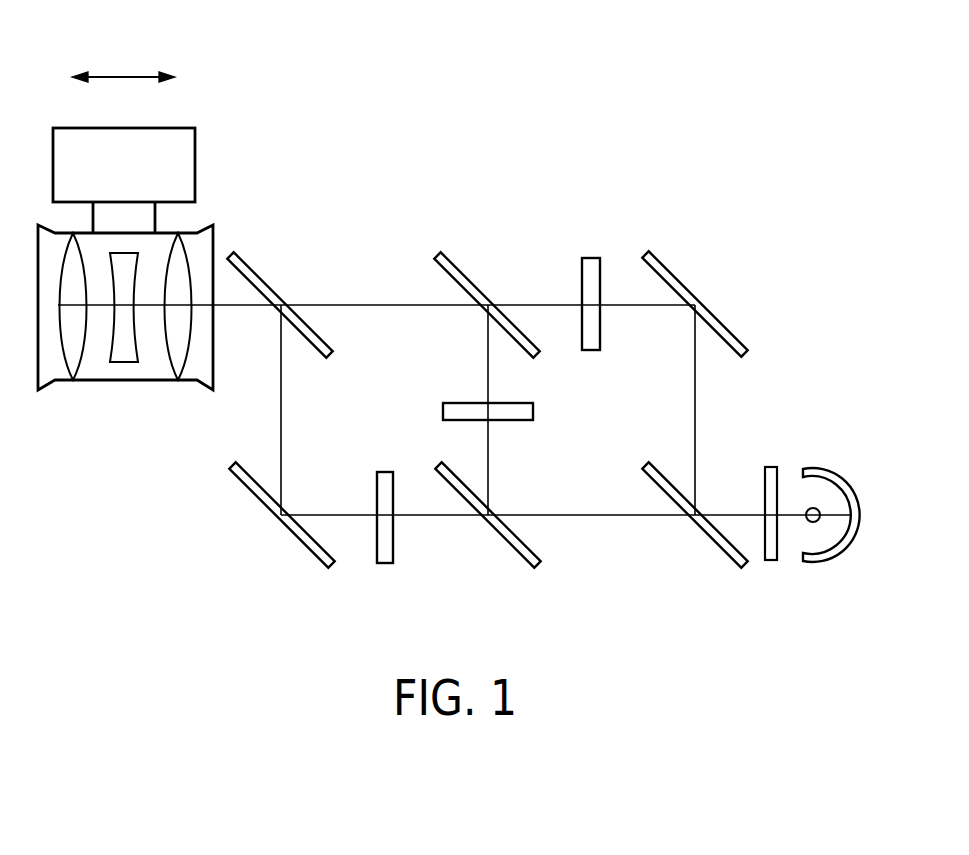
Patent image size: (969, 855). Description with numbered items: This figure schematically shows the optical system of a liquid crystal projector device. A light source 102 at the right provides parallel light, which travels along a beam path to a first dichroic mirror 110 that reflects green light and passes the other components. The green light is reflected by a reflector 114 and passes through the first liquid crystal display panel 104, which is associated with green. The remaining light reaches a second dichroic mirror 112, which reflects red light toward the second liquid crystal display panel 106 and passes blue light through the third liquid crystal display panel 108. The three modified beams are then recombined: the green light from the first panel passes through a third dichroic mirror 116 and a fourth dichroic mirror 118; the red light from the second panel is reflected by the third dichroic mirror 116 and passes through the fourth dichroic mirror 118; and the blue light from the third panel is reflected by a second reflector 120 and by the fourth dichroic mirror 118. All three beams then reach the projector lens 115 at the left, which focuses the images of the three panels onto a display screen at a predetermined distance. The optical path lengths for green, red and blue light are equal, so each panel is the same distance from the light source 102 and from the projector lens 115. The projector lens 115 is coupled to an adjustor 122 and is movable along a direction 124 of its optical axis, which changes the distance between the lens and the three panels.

The light source 102 is at (815, 470).
The first liquid crystal display panel 104 is at (600, 345).
The second liquid crystal display panel 106 is at (518, 420).
The third liquid crystal display panel 108 is at (373, 490).
The first dichroic mirror 110 is at (727, 557).
The second dichroic mirror 112 is at (518, 557).
The reflector 114 is at (673, 270).
The projector lens 115 is at (155, 380).
The third dichroic mirror 116 is at (467, 273).
The fourth dichroic mirror 118 is at (260, 273).
The second reflector 120 is at (310, 557).
The adjustor 122 is at (197, 145).
The direction 124 is at (118, 77).